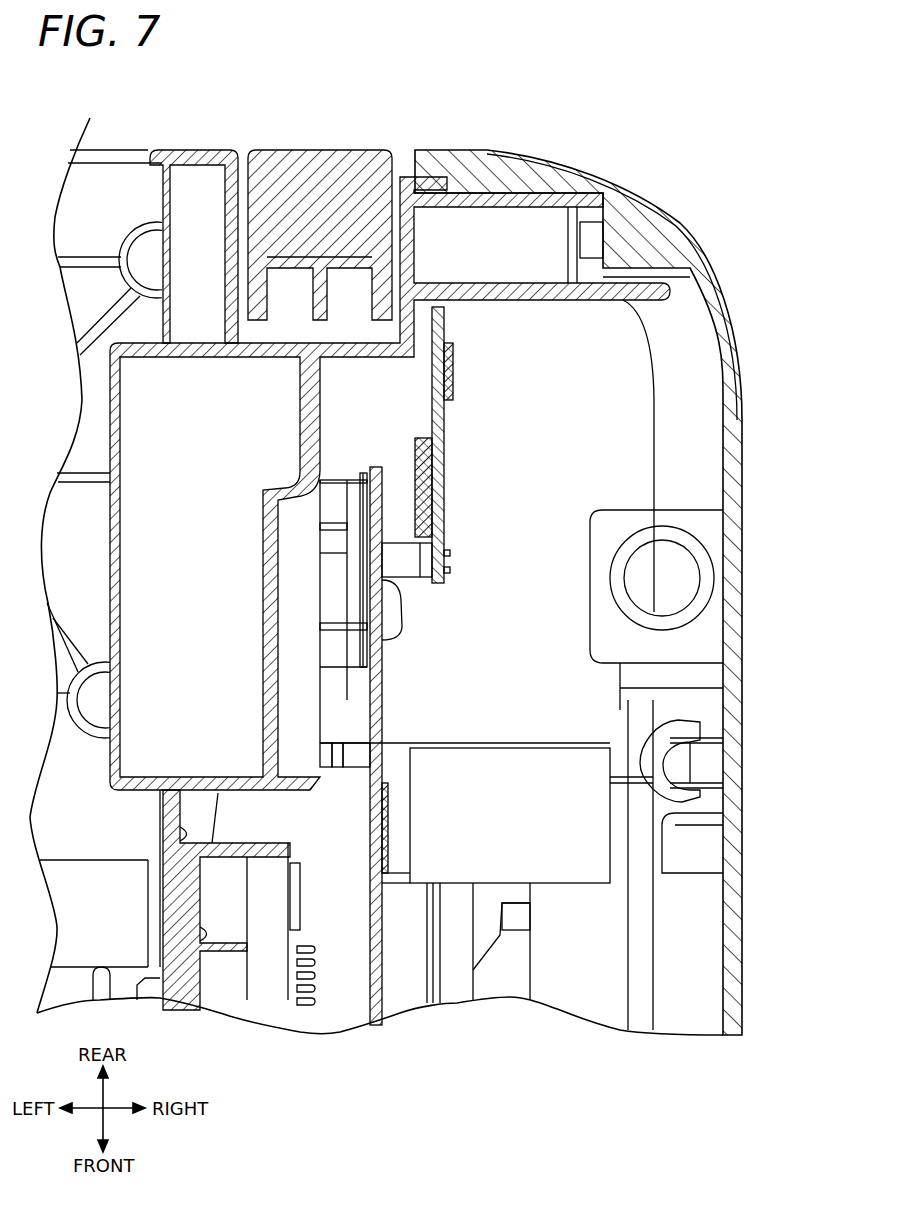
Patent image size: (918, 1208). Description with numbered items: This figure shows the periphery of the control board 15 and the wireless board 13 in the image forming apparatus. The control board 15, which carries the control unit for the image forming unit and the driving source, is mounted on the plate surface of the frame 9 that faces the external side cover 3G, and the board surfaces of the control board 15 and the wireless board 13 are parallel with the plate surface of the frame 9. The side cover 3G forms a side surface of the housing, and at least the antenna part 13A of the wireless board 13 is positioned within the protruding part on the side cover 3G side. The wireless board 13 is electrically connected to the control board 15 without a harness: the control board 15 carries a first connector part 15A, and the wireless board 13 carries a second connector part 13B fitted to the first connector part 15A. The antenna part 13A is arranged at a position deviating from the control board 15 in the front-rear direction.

The antenna part 13A is at (449, 368).
The wireless board 13 is at (446, 430).
The second connector part 13B is at (427, 554).
The side cover 3G is at (742, 595).
The first connector part 15A is at (403, 567).
The control board 15 is at (383, 768).
The frame 9 is at (240, 793).